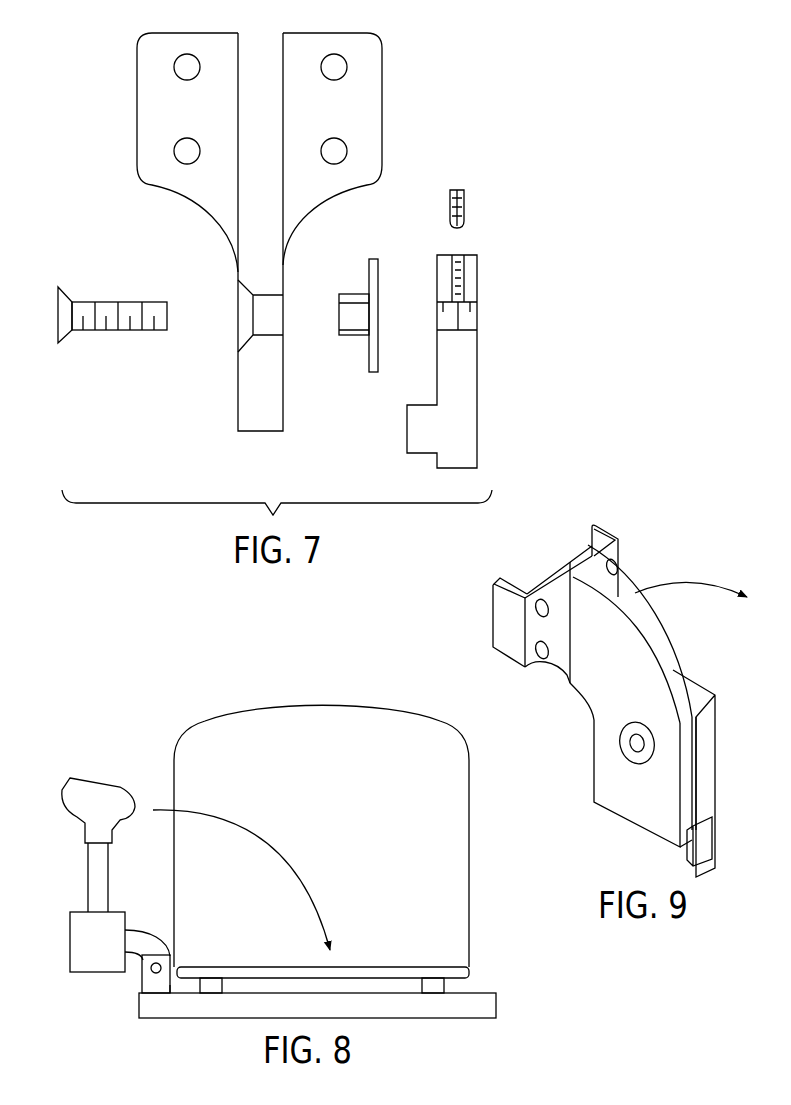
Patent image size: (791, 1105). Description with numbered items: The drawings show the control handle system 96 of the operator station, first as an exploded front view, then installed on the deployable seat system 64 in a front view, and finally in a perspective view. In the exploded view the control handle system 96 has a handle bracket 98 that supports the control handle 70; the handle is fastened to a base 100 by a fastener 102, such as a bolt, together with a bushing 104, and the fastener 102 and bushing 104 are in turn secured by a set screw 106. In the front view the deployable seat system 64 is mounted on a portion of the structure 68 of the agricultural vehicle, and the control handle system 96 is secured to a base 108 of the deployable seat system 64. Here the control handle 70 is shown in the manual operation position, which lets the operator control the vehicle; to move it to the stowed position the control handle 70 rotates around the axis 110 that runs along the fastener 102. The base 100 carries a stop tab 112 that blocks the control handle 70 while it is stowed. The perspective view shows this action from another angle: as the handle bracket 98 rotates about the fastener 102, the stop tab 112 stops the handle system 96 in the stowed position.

In FIG. 8, the deployable seat system 64 is at (150, 705).
In FIG. 8, the structure 68 is at (470, 862).
In FIG. 8, the control handle 70 is at (88, 878).
In FIG. 7, the control handle system 96 is at (97, 152).
In FIG. 9, the control handle system 96 is at (480, 574).
In FIG. 8, the control handle system 96 is at (62, 823).
In FIG. 7, the handle bracket 98 is at (237, 232).
In FIG. 9, the handle bracket 98 is at (593, 690).
In FIG. 8, the handle bracket 98 is at (70, 942).
In FIG. 7, the base 100 is at (457, 375).
In FIG. 9, the base 100 is at (708, 756).
In FIG. 8, the base 100 is at (150, 983).
In FIG. 7, the fastener 102 is at (113, 332).
In FIG. 9, the fastener 102 is at (635, 755).
In FIG. 8, the fastener 102 is at (160, 966).
In FIG. 7, the bushing 104 is at (352, 335).
In FIG. 7, the set screw 106 is at (465, 206).
In FIG. 8, the base 108 is at (413, 1007).
In FIG. 8, the axis 110 is at (265, 843).
In FIG. 9, the stop tab 112 is at (703, 840).
In FIG. 8, the stop tab 112 is at (175, 985).